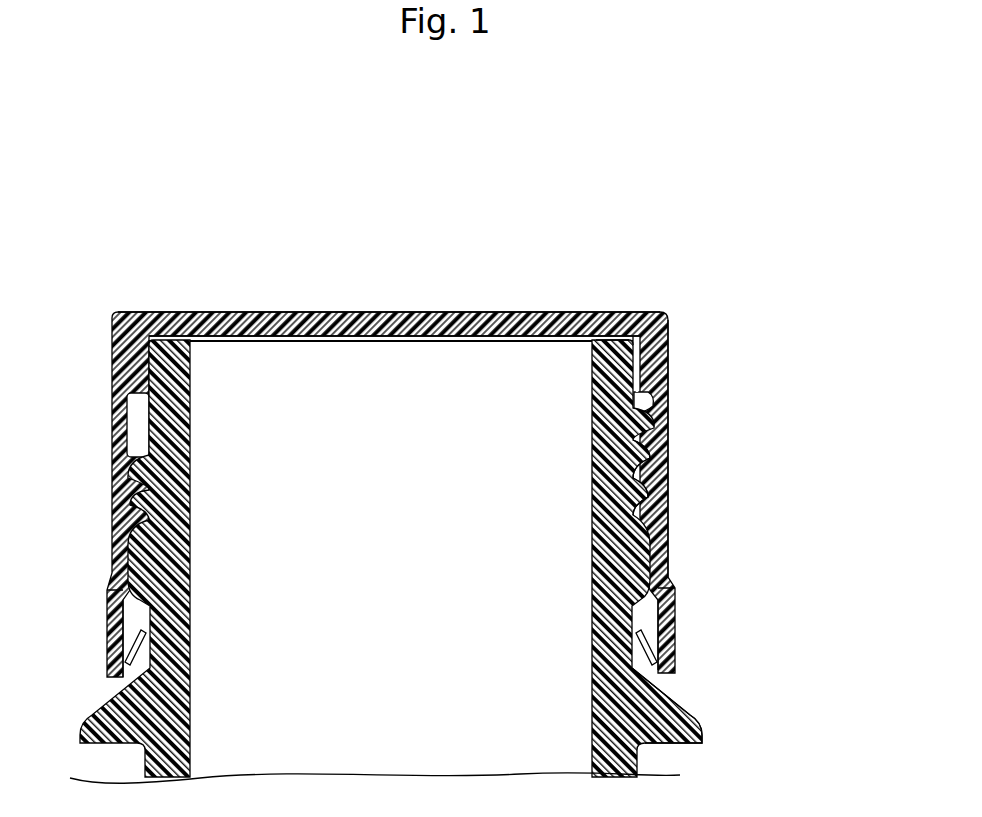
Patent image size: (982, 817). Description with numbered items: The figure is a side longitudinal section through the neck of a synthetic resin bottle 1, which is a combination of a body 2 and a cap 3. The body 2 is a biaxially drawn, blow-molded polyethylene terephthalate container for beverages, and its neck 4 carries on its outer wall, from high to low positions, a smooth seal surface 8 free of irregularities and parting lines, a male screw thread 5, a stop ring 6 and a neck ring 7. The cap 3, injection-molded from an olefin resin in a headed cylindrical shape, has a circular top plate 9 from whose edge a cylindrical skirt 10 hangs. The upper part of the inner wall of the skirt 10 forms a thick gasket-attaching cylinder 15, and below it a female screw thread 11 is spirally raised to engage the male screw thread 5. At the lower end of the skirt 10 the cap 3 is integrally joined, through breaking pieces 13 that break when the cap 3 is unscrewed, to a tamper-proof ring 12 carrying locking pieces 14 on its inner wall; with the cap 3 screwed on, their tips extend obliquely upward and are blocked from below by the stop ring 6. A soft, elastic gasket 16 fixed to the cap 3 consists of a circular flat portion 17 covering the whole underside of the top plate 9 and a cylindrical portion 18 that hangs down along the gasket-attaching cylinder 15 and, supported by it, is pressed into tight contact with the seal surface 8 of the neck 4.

The synthetic resin bottle 1 is at (449, 446).
The body 2 is at (431, 513).
The cap 3 is at (435, 302).
The neck 4 is at (571, 348).
The male screw thread 5 is at (665, 413).
The stop ring 6 is at (668, 550).
The neck ring 7 is at (700, 725).
The seal surface 8 is at (620, 334).
The top plate 9 is at (481, 311).
The skirt 10 is at (666, 482).
The female screw thread 11 is at (668, 453).
The tamper-proof ring 12 is at (672, 632).
The breaking pieces 13 is at (673, 585).
The locking pieces 14 is at (645, 660).
The gasket-attaching cylinder 15 is at (652, 368).
The gasket 16 is at (535, 368).
The flat portion 17 is at (523, 334).
The cylindrical portion 18 is at (637, 340).